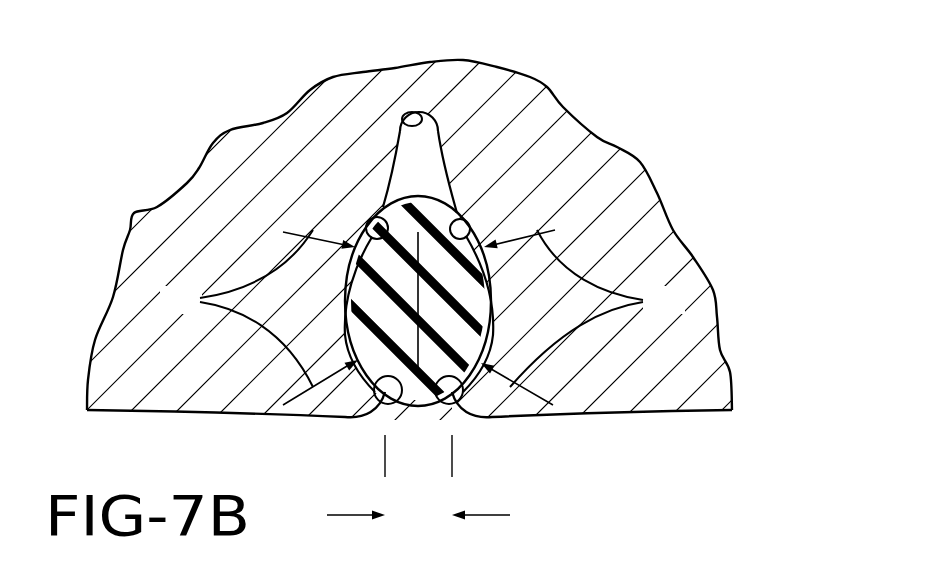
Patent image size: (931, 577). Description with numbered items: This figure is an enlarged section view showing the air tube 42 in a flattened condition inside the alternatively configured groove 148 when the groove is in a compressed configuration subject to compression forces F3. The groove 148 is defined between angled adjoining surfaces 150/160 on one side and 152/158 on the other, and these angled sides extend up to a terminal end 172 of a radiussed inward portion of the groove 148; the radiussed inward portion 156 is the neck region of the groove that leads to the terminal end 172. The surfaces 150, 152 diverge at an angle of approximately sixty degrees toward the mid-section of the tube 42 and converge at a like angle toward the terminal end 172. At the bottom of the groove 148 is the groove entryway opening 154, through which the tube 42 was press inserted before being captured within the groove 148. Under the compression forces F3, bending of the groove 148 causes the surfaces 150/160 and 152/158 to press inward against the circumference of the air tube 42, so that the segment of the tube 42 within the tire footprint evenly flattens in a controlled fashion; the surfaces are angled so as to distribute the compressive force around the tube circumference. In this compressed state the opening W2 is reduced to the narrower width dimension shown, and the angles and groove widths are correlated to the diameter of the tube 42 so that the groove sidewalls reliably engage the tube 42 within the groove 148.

The air tube 42 is at (425, 200).
The neck passage 156 is at (424, 140).
The terminal end 172 is at (402, 120).
The angled adjoining surface 160 is at (372, 218).
The angled adjoining surface 158 is at (466, 218).
The groove 148 is at (378, 418).
The groove entryway opening 154 is at (459, 418).
The angled surface 150 is at (408, 395).
The angled surface 152 is at (429, 395).
The compression forces F3 is at (421, 317).
The opening width dimension W2 is at (418, 481).